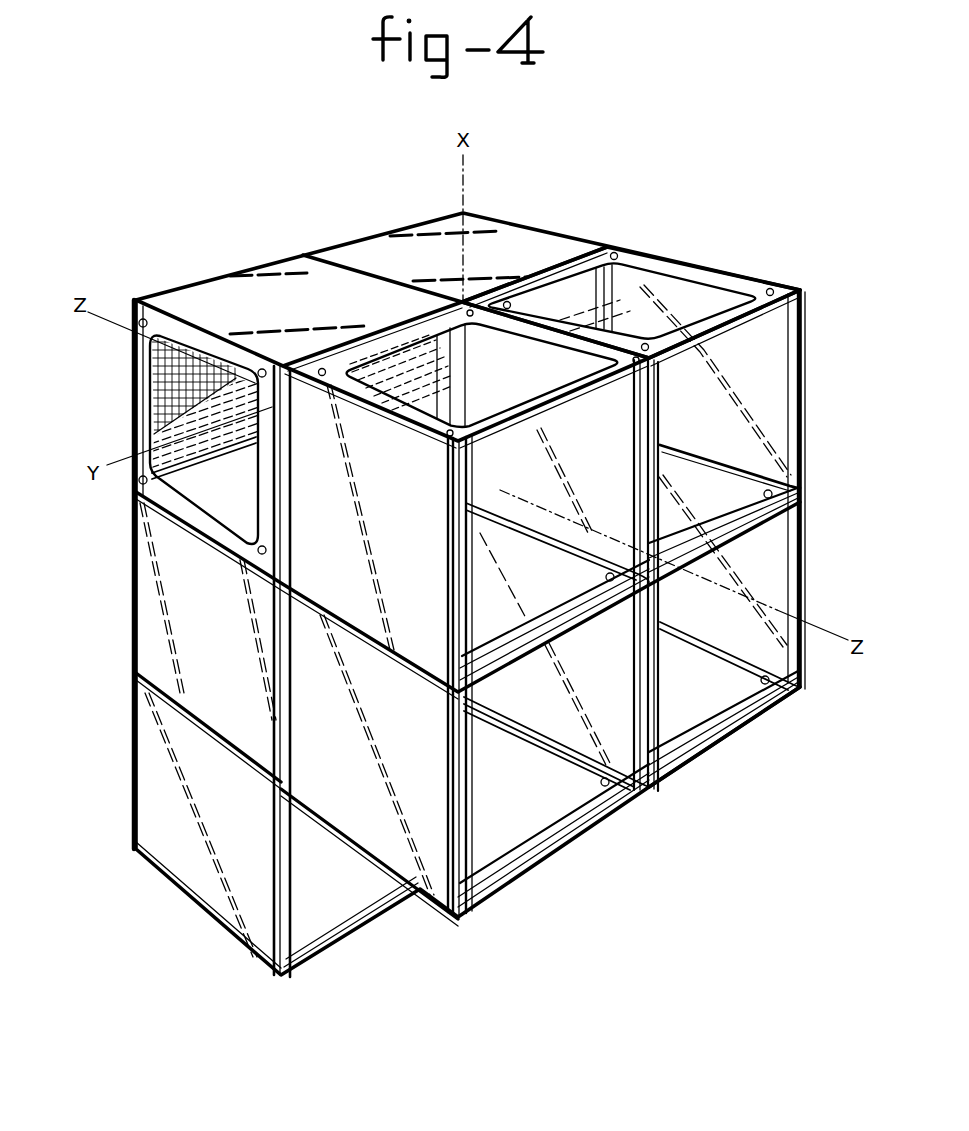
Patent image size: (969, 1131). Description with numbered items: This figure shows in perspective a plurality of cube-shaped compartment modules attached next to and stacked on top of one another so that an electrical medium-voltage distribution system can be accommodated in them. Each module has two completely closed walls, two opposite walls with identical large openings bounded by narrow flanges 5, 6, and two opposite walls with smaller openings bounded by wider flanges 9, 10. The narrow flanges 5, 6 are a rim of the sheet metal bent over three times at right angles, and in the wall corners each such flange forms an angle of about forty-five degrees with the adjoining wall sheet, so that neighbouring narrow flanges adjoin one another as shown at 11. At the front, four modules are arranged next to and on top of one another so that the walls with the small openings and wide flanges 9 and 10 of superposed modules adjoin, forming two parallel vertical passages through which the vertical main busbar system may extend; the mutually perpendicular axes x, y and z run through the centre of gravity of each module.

The narrow flange 5 is at (603, 250).
The narrow flange 6 is at (803, 390).
The wide flange 9 is at (713, 272).
The wide flange 10 is at (713, 467).
The junction of narrow flanges 11 is at (773, 684).